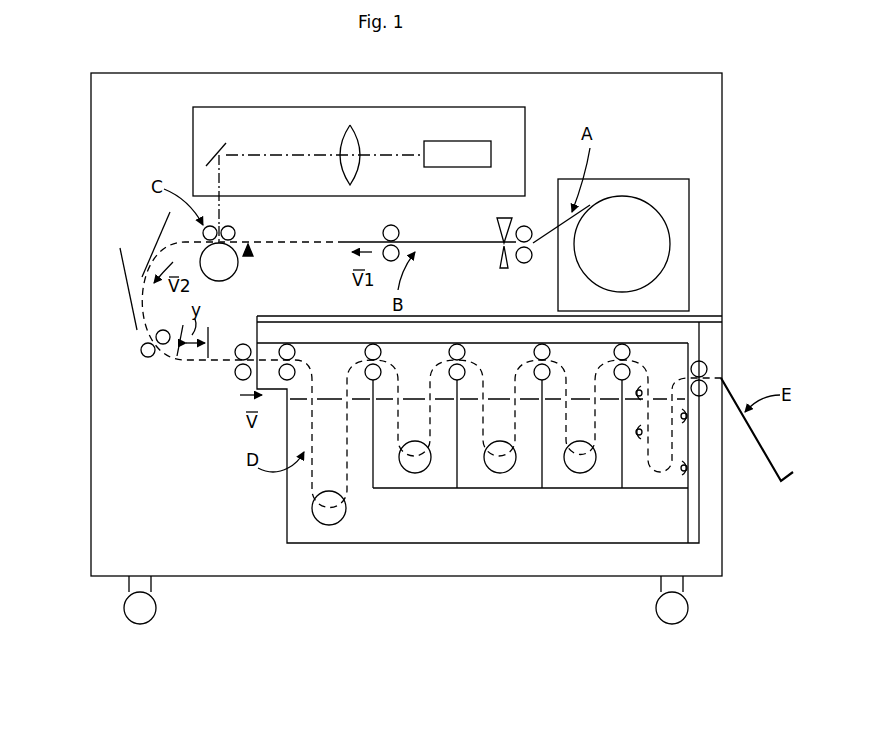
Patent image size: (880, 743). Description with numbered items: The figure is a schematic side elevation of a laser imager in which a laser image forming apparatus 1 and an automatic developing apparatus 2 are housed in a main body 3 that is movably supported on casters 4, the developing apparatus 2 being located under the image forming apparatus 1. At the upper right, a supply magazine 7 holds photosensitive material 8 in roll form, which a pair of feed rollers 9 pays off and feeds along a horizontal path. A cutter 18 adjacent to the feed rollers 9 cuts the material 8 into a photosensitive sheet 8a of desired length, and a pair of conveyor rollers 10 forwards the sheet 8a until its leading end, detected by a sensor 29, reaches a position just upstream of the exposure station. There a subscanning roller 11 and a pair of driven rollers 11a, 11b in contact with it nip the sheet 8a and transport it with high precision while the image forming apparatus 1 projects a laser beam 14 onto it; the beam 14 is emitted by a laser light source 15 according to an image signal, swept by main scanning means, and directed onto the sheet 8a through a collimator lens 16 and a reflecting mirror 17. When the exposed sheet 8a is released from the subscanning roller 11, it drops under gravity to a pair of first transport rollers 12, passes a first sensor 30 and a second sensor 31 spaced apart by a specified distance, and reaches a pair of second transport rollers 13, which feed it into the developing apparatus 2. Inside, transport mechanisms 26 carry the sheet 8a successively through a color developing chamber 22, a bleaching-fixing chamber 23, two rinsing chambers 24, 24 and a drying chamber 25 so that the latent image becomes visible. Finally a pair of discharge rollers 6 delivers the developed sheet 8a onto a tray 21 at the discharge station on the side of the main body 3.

The laser image forming apparatus 1 is at (190, 135).
The automatic developing apparatus 2 is at (441, 550).
The main body 3 is at (90, 387).
The casters 4 is at (126, 620).
The pair of discharge rollers 6 is at (706, 366).
The supply magazine 7 is at (673, 178).
The photosensitive material 8 is at (644, 196).
The photosensitive sheet 8a is at (440, 244).
The pair of feed rollers 9 is at (528, 225).
The pair of conveyor rollers 10 is at (399, 229).
The subscanning roller 11 is at (237, 277).
The driven roller 11a is at (240, 234).
The driven roller 11b is at (198, 234).
The pair of first transport rollers 12 is at (146, 357).
The pair of second transport rollers 13 is at (526, 114).
The laser beam 14 is at (221, 207).
The laser light source 15 is at (468, 141).
The collimator lens 16 is at (357, 143).
The reflecting mirror 17 is at (218, 143).
The cutter 18 is at (500, 262).
The tray 21 is at (762, 460).
The color developing chamber 22 is at (302, 538).
The bleaching-fixing chamber 23 is at (392, 488).
The rinsing chamber 24 is at (470, 488).
The drying chamber 25 is at (632, 488).
The transport mechanisms 26 is at (295, 346).
The sensor 29 is at (255, 256).
The first sensor 30 is at (174, 364).
The second sensor 31 is at (205, 363).